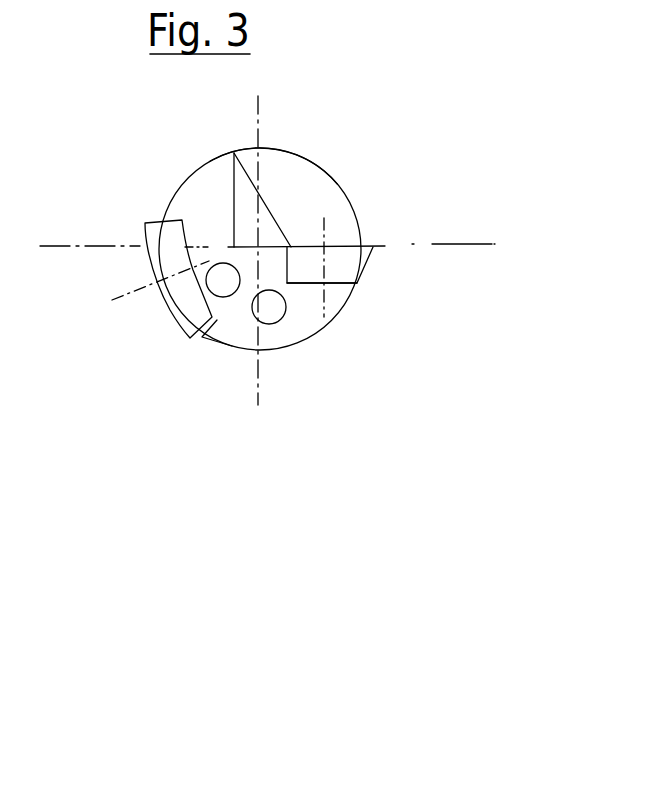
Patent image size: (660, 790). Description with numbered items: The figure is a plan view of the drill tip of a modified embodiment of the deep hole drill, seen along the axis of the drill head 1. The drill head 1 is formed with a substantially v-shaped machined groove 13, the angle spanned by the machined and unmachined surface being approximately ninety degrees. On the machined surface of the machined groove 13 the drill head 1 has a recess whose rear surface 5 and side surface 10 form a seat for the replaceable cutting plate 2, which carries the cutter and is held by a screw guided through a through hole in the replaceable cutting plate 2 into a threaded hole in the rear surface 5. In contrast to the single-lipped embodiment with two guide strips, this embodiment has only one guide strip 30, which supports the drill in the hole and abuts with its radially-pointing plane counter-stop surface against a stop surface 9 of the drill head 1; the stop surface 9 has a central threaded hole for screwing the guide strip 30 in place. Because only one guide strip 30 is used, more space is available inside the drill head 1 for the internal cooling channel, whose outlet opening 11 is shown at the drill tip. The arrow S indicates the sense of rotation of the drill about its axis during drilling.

The drill head 1 is at (285, 330).
The replaceable cutting plate 2 is at (350, 265).
The rear surface 5 is at (308, 283).
The stop surface 9 is at (178, 260).
The side surface 10 is at (288, 268).
The outlet opening 11 is at (222, 282).
The machined groove 13 is at (310, 190).
The guide strip 30 is at (182, 300).
The direction of rotation S is at (565, 196).